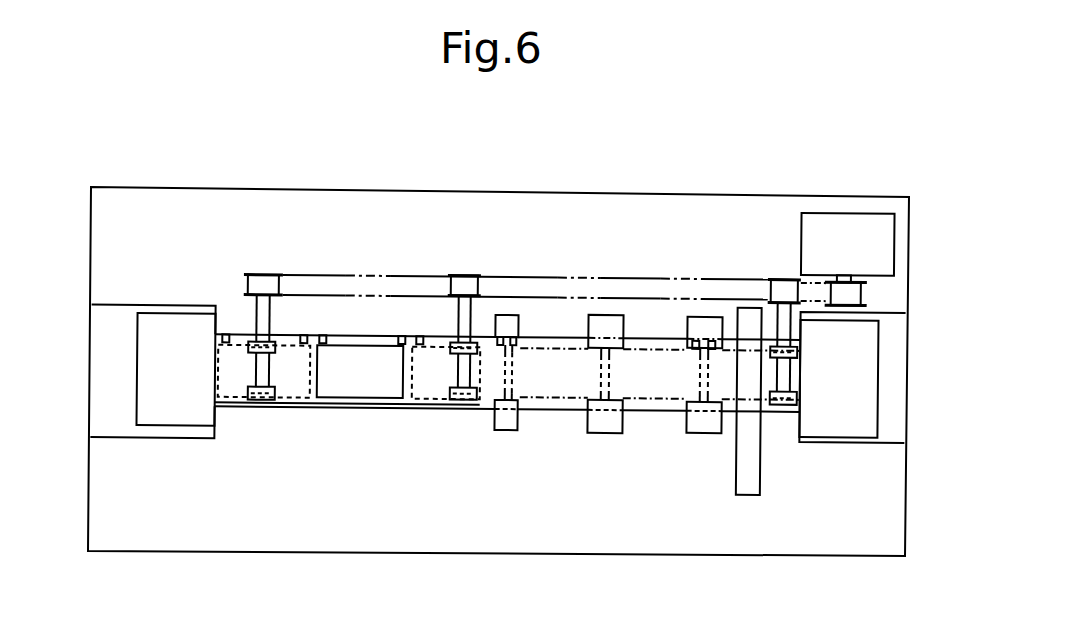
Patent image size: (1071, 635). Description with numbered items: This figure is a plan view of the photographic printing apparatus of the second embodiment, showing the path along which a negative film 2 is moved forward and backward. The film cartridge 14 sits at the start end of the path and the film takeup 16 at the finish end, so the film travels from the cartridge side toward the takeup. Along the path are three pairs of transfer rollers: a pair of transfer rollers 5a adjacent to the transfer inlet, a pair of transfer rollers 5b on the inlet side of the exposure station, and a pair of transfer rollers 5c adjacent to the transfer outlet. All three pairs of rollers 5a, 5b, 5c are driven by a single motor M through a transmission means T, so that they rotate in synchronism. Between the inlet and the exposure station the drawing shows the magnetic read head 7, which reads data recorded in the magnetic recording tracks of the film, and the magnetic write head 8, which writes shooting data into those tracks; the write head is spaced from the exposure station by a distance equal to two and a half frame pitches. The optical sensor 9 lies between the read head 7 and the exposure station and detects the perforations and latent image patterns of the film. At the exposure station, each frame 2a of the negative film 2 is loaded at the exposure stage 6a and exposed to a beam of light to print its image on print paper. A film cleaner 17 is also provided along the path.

The negative film 2 is at (391, 397).
The frame 2a is at (332, 334).
The pair of transfer rollers 5a is at (785, 402).
The pair of transfer rollers 5b is at (456, 403).
The pair of transfer rollers 5c is at (257, 403).
The exposure stage 6a is at (347, 398).
The magnetic read head 7 is at (713, 318).
The magnetic write head 8 is at (613, 325).
The optical sensor 9 is at (512, 323).
The film cartridge 14 is at (848, 425).
The film takeup 16 is at (160, 333).
The film cleaner 17 is at (747, 488).
The transmission means T is at (694, 288).
The motor M is at (843, 222).